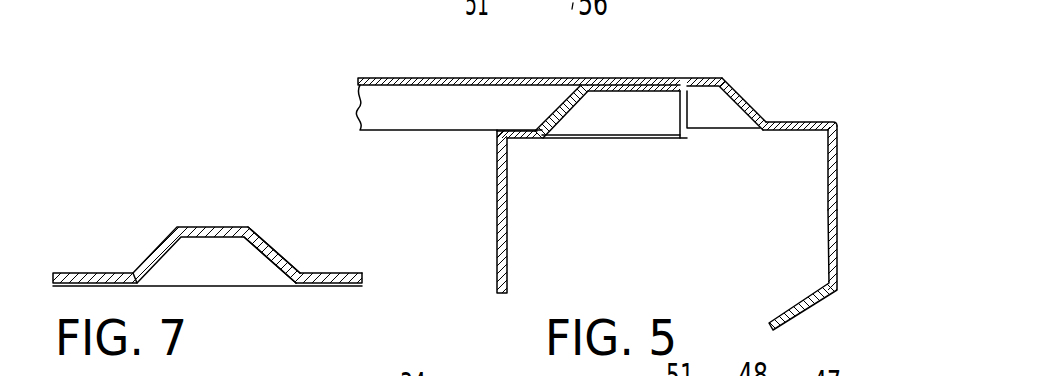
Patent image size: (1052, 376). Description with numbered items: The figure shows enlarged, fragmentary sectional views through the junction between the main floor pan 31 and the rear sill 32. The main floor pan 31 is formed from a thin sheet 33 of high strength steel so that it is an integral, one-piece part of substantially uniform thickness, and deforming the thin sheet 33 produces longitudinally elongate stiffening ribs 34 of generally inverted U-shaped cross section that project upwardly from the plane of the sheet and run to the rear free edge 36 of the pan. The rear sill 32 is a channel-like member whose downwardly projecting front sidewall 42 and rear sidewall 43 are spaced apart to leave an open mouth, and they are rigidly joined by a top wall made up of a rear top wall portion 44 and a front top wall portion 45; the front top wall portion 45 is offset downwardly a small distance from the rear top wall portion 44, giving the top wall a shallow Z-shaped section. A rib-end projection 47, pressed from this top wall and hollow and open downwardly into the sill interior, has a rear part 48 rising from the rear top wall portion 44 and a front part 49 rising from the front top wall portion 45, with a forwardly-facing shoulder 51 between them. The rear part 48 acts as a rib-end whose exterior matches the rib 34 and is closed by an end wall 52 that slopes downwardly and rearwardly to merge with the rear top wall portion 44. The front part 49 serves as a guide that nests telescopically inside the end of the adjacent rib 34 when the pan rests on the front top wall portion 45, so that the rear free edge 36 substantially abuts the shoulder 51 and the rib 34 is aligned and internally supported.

In FIG. 7, the main floor pan 31 is at (92, 270).
In FIG. 5, the main floor pan 31 is at (410, 138).
In FIG. 5, the rear sill 32 is at (490, 226).
In FIG. 7, the thin sheet 33 is at (328, 272).
In FIG. 7, the stiffening rib 34 is at (205, 227).
In FIG. 5, the stiffening rib 34 is at (465, 79).
In FIG. 5, the rear free edge 36 is at (680, 78).
In FIG. 5, the front sidewall 42 is at (505, 265).
In FIG. 5, the rear sidewall 43 is at (828, 245).
In FIG. 5, the rear top wall portion 44 is at (810, 122).
In FIG. 7, the front top wall portion 45 is at (342, 288).
In FIG. 5, the front top wall portion 45 is at (520, 137).
In FIG. 5, the rib-end projection 47 is at (625, 88).
In FIG. 5, the rear part 48 is at (707, 79).
In FIG. 7, the front part 49 is at (270, 260).
In FIG. 5, the shoulder 51 is at (690, 93).
In FIG. 5, the end wall 52 is at (743, 98).